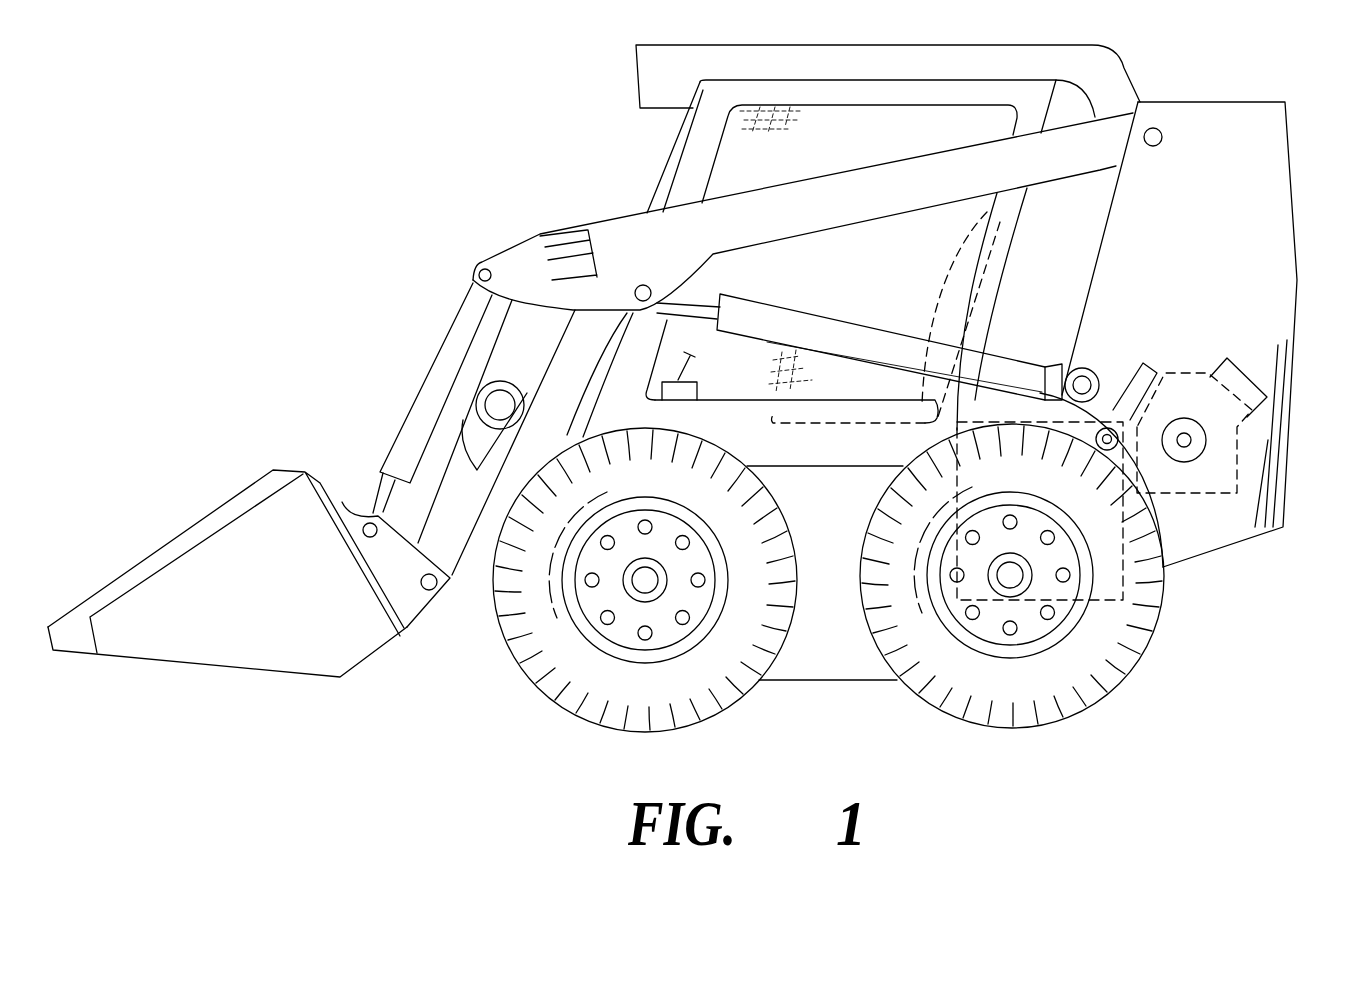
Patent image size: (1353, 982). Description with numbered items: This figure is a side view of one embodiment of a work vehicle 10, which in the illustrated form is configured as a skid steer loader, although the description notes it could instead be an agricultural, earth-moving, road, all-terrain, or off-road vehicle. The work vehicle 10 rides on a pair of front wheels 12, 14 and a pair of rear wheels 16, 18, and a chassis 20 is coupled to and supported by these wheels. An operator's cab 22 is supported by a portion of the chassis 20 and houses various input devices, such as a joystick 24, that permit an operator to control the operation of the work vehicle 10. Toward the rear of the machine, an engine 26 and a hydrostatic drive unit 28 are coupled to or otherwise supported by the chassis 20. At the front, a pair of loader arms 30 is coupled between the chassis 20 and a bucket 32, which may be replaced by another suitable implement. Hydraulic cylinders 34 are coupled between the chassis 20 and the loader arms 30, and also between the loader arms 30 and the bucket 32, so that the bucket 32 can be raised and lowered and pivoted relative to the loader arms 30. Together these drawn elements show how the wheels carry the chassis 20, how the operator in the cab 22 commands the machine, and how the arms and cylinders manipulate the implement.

The work vehicle 10 is at (260, 143).
The front wheel 12 is at (580, 702).
The front wheel 14 is at (645, 580).
The rear wheel 16 is at (1093, 705).
The rear wheel 18 is at (1003, 572).
The chassis 20 is at (820, 666).
The operator's cab 22 is at (673, 186).
The joystick 24 is at (697, 368).
The engine 26 is at (1280, 458).
The hydrostatic drive unit 28 is at (1135, 614).
The loader arm 30 is at (520, 261).
The bucket 32 is at (230, 553).
The hydraulic cylinder 34 is at (420, 408).